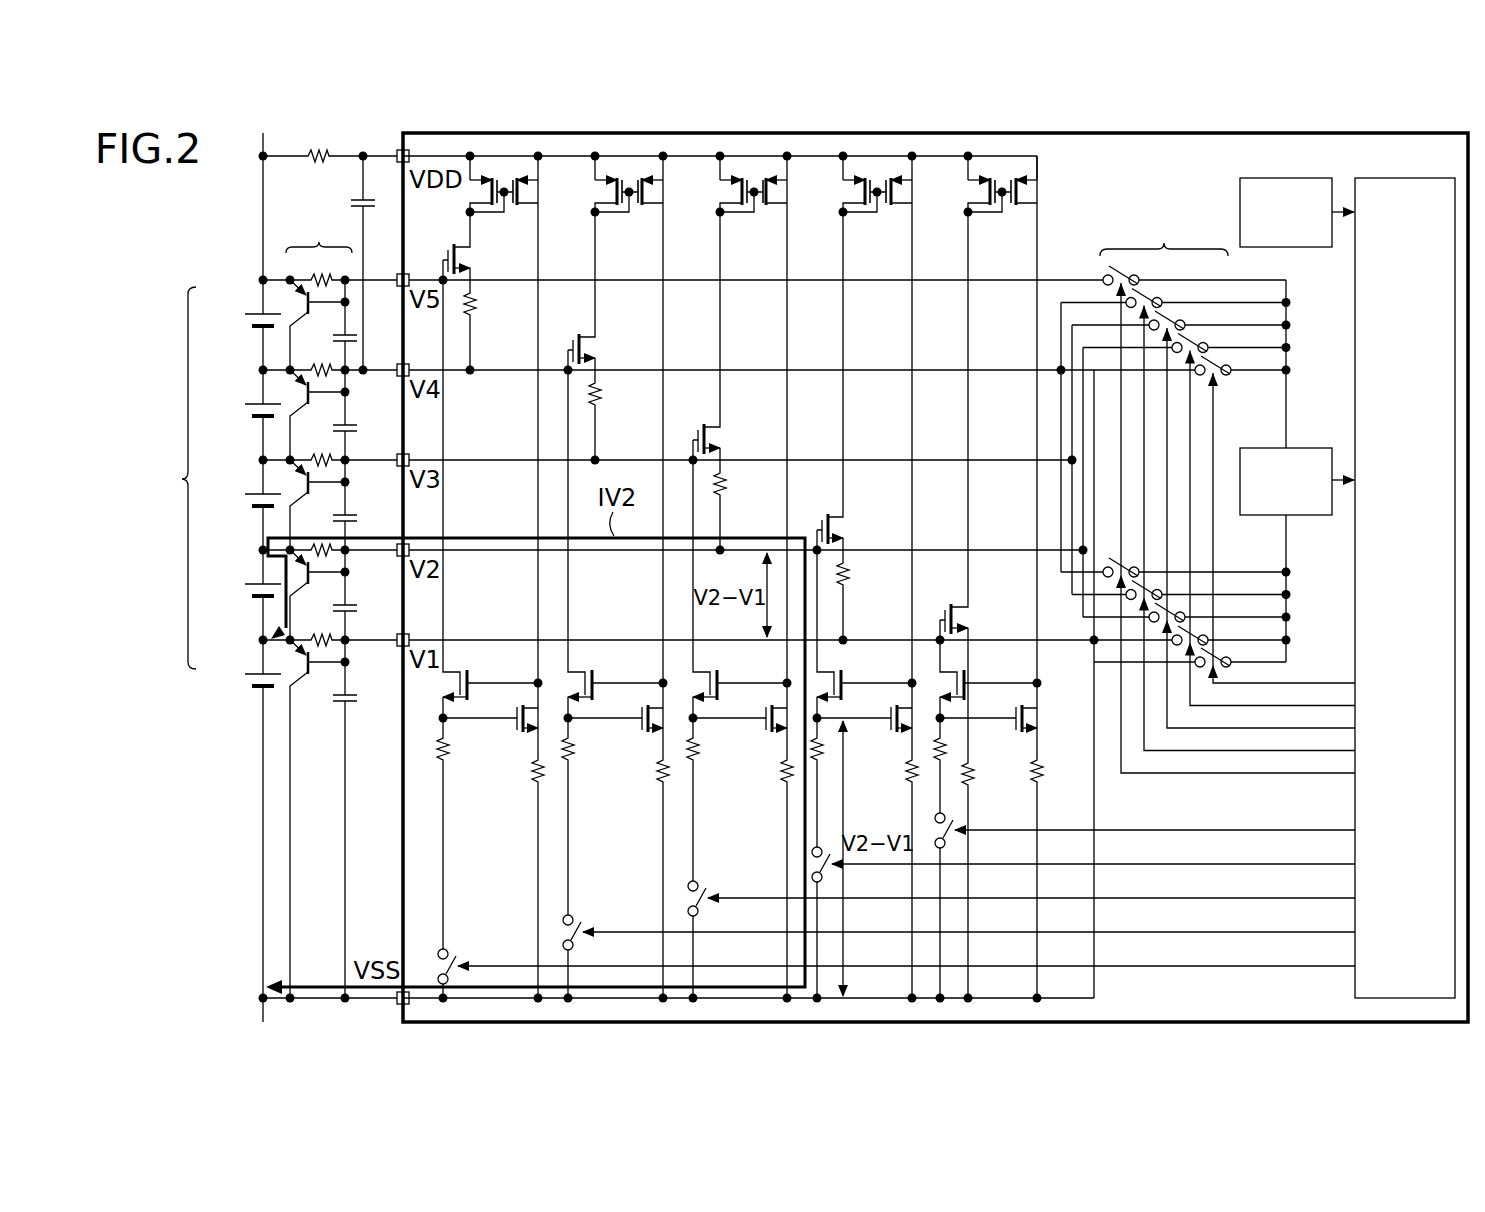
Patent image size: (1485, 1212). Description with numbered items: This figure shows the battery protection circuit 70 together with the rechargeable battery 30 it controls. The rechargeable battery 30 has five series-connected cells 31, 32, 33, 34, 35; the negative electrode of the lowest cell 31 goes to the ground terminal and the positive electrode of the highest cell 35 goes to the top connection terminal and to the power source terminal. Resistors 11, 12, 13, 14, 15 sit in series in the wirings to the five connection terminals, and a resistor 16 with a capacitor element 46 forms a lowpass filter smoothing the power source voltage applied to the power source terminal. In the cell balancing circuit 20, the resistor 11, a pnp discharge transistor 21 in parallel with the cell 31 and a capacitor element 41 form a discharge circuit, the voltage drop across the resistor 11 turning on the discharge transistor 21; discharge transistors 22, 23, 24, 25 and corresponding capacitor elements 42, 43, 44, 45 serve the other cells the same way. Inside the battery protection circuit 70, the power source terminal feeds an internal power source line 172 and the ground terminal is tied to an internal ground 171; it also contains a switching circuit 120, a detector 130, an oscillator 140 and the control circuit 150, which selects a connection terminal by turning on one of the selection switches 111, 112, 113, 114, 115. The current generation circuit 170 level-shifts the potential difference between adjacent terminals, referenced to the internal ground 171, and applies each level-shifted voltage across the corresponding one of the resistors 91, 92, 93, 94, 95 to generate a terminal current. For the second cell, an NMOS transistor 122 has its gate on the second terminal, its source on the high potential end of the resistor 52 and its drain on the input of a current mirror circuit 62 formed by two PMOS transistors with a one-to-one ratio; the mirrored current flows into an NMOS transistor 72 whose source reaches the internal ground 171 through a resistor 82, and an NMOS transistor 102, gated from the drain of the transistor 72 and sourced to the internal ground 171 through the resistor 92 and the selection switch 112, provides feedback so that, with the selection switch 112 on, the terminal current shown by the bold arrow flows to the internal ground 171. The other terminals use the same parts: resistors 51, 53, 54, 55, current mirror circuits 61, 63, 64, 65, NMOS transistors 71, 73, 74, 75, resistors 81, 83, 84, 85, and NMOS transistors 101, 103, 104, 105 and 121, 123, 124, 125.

The resistor 11 is at (332, 641).
The resistor 12 is at (333, 552).
The resistor 13 is at (332, 461).
The resistor 14 is at (332, 371).
The resistor 15 is at (332, 281).
The resistor 16 is at (330, 152).
The cell balancing circuit 20 is at (319, 236).
The discharge transistor 21 is at (310, 676).
The discharge transistor 22 is at (310, 586).
The discharge transistor 23 is at (310, 496).
The discharge transistor 24 is at (310, 406).
The discharge transistor 25 is at (310, 316).
The rechargeable battery 30 is at (204, 577).
The cell 31 is at (252, 674).
The cell 32 is at (252, 584).
The cell 33 is at (252, 494).
The cell 34 is at (252, 404).
The cell 35 is at (252, 314).
The capacitor element 41 is at (356, 695).
The capacitor 42 is at (356, 607).
The capacitor 43 is at (356, 517).
The capacitor 44 is at (356, 426).
The capacitor 45 is at (356, 336).
The capacitor element 46 is at (358, 202).
The resistor 51 is at (975, 764).
The resistor 52 is at (850, 564).
The resistor 53 is at (727, 474).
The resistor 54 is at (602, 384).
The resistor 55 is at (477, 294).
The current mirror circuit 61 is at (1006, 229).
The current mirror circuit 62 is at (881, 229).
The current mirror circuit 63 is at (758, 229).
The current mirror circuit 64 is at (633, 229).
The current mirror circuit 65 is at (508, 229).
The battery protection circuit 70 is at (935, 133).
The transistor 71 is at (1016, 708).
The NMOS transistor 72 is at (891, 708).
The transistor 73 is at (766, 708).
The transistor 74 is at (642, 708).
The transistor 75 is at (517, 708).
The resistor 81 is at (1026, 780).
The resistor 82 is at (901, 780).
The resistor 83 is at (776, 780).
The resistor 84 is at (652, 780).
The resistor 85 is at (527, 780).
The resistor 91 is at (948, 745).
The resistor 92 is at (825, 745).
The resistor 93 is at (701, 745).
The resistor 94 is at (576, 745).
The resistor 95 is at (451, 745).
The transistor 101 is at (954, 673).
The NMOS transistor 102 is at (831, 673).
The transistor 103 is at (707, 673).
The transistor 104 is at (582, 673).
The transistor 105 is at (457, 673).
The selection switch 111 is at (946, 842).
The selection switch 112 is at (823, 876).
The selection switch 113 is at (699, 910).
The selection switch 114 is at (574, 944).
The selection switch 115 is at (453, 962).
The switching circuit 120 is at (1165, 440).
The transistor 121 is at (948, 609).
The NMOS transistor 122 is at (825, 519).
The transistor 123 is at (701, 429).
The transistor 124 is at (576, 339).
The transistor 125 is at (456, 246).
The detector 130 is at (1298, 449).
The oscillator 140 is at (1298, 179).
The control circuit 150 is at (1400, 179).
The current generation circuit 170 is at (1080, 216).
The internal ground 171 is at (1066, 1004).
The internal power source line 172 is at (1040, 153).